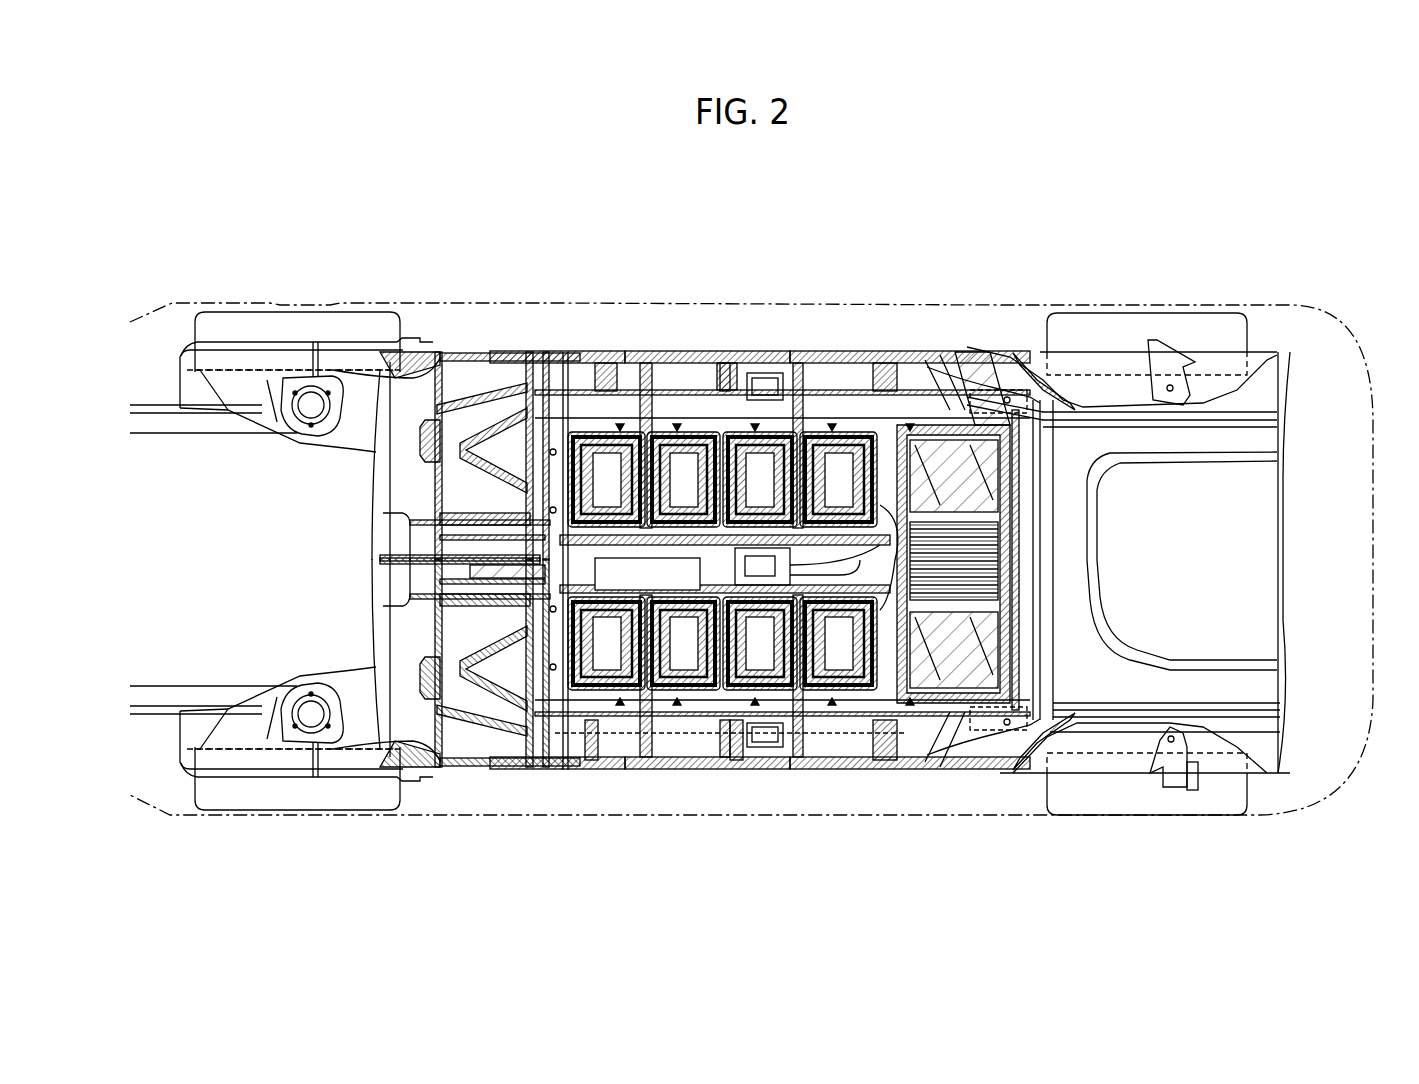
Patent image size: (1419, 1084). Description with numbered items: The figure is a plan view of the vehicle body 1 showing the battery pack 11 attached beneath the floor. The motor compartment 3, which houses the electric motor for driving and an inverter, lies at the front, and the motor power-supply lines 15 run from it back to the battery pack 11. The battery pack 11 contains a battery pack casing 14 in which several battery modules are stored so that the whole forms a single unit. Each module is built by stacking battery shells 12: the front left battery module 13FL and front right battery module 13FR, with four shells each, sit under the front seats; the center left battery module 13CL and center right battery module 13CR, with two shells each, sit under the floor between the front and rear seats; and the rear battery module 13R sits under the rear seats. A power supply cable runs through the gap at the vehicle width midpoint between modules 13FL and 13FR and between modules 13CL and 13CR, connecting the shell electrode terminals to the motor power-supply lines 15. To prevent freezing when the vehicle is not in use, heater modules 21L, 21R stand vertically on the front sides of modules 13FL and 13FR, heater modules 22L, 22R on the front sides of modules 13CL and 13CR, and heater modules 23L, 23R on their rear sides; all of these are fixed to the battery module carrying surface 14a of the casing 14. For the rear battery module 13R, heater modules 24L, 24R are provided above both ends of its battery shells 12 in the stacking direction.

The vehicle body 1 is at (1262, 305).
The motor compartment 3 is at (235, 561).
The vehicle battery pack 11 is at (900, 352).
The battery shell 12 is at (606, 470).
The front right battery module 13FR is at (663, 352).
The front left battery module 13FL is at (658, 770).
The center right battery module 13CR is at (833, 352).
The center left battery module 13CL is at (807, 770).
The rear battery module 13R is at (973, 352).
The battery pack casing 14 is at (725, 352).
The battery module carrying surface 14a is at (765, 385).
The motor power-supply lines 15 is at (570, 572).
The heater module 21R is at (555, 352).
The heater module 21L is at (568, 770).
The heater module 22R is at (701, 352).
The heater module 22L is at (717, 770).
The heater module 23R is at (866, 352).
The heater module 23L is at (877, 770).
The heater module 24R is at (1013, 468).
The heater module 24L is at (1013, 660).